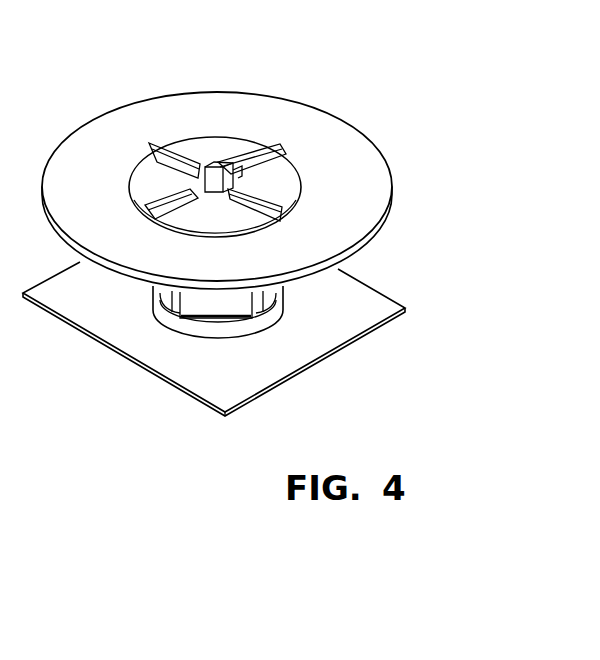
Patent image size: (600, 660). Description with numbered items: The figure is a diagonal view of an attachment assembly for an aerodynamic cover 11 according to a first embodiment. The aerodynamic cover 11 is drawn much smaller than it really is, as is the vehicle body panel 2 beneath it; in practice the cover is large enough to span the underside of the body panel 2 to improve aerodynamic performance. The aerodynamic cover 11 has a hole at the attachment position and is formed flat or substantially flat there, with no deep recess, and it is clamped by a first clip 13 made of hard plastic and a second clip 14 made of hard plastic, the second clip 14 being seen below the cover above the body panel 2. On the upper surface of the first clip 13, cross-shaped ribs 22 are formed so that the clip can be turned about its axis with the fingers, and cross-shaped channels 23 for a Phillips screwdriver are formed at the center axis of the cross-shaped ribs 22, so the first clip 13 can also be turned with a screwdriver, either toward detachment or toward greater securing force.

The body panel 2 is at (390, 292).
The aerodynamic cover 11 is at (390, 163).
The first clip 13 is at (254, 134).
The second clip 14 is at (186, 338).
The cross-shaped ribs 22 is at (183, 158).
The cross-shaped channels 23 is at (214, 163).